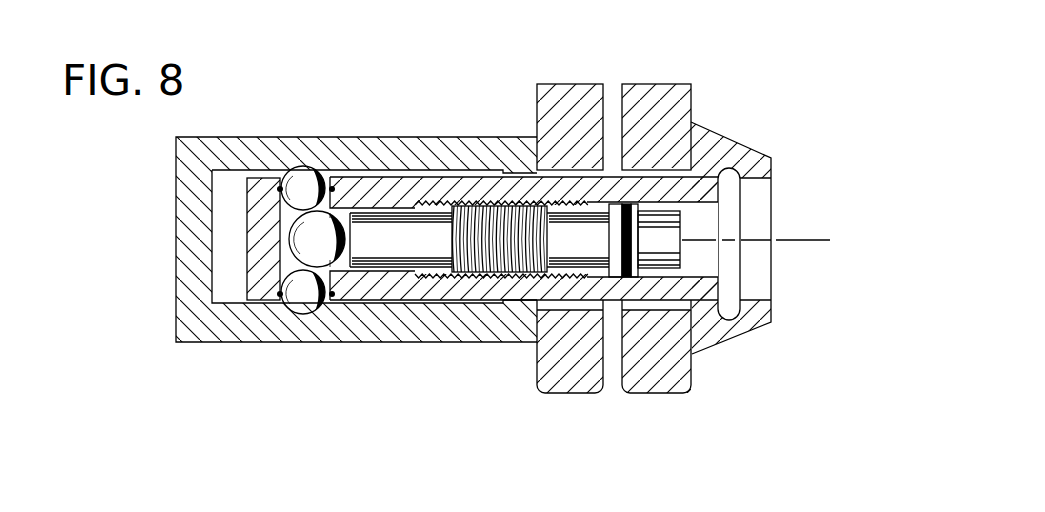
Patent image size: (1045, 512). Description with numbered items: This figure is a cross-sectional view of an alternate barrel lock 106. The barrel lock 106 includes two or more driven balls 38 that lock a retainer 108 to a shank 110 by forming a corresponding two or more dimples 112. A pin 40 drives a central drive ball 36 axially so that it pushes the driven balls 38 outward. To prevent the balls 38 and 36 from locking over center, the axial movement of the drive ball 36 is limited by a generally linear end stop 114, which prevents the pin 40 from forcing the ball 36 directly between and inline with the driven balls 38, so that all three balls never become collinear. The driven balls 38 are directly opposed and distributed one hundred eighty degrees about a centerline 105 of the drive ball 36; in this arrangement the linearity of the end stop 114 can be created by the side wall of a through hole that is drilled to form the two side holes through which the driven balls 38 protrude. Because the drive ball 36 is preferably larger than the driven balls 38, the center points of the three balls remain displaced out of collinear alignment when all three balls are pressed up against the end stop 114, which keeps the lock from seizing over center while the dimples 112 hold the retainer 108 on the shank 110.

The drive ball 36 is at (340, 262).
The driven balls 38 is at (293, 183).
The pin 40 is at (375, 208).
The centerline 105 is at (808, 243).
The barrel lock 106 is at (793, 114).
The retainer 108 is at (457, 137).
The shank 110 is at (412, 303).
The dimples 112 is at (305, 312).
The end stop 114 is at (300, 234).